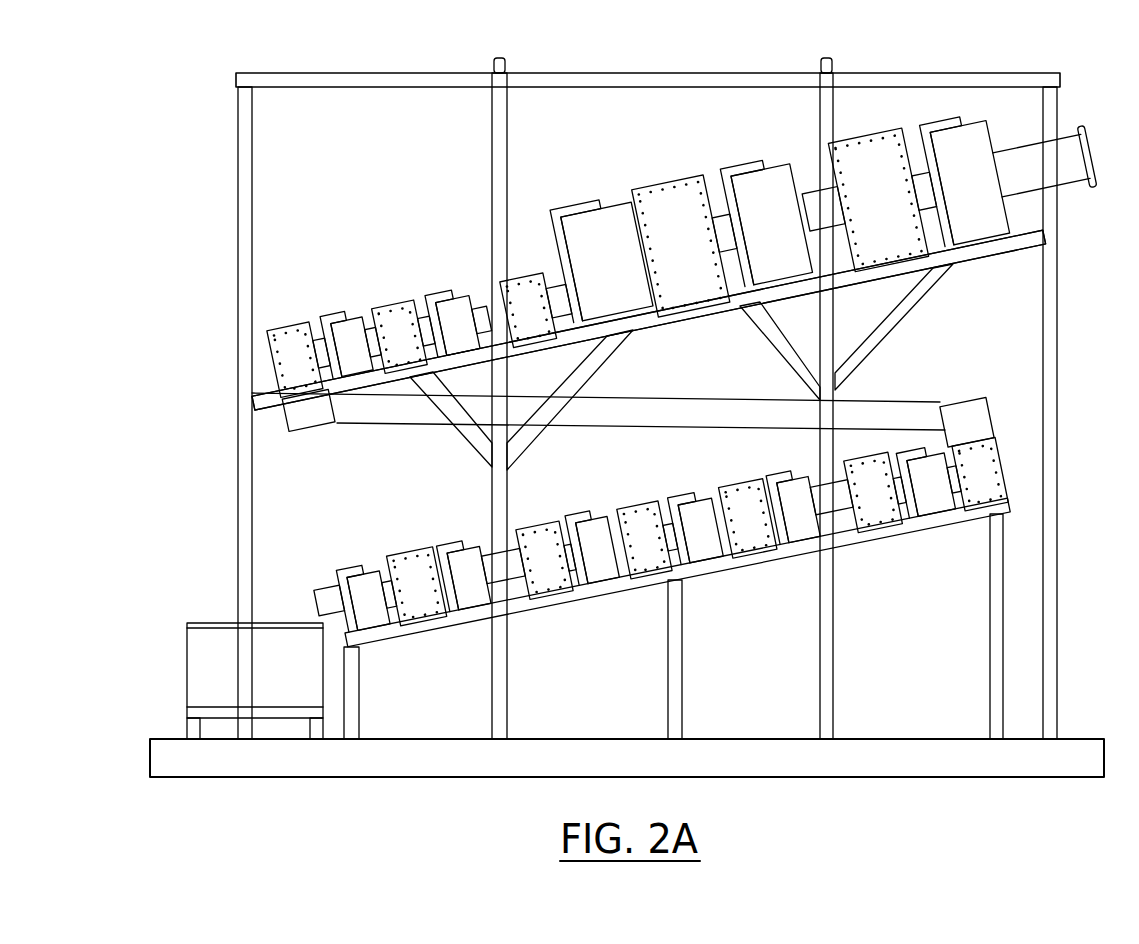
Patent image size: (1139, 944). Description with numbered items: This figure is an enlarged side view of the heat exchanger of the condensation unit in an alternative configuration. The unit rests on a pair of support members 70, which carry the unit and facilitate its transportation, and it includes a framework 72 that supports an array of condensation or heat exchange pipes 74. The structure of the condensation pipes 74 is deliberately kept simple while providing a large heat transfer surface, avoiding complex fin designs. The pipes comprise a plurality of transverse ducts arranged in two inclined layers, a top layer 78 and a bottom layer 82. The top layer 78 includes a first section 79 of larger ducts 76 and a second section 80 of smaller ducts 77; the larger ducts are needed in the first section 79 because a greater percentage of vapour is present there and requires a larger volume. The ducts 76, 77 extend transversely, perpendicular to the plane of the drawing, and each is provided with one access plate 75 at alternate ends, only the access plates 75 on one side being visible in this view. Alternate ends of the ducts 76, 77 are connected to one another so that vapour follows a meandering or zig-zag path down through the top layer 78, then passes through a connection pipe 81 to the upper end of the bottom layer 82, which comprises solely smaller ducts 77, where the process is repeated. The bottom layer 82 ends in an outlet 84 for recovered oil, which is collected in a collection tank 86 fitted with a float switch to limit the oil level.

The support members 70 is at (583, 744).
The framework 72 is at (238, 490).
The condensation pipes 74 is at (270, 345).
The access plate 75 is at (540, 347).
The larger ducts 76 is at (903, 258).
The smaller ducts 77 is at (392, 303).
The top layer 78 is at (955, 133).
The first section 79 is at (662, 183).
The second section 80 is at (450, 297).
The connection pipe 81 is at (393, 418).
The bottom layer 82 is at (753, 548).
The outlet 84 is at (327, 587).
The collection tank 86 is at (193, 668).